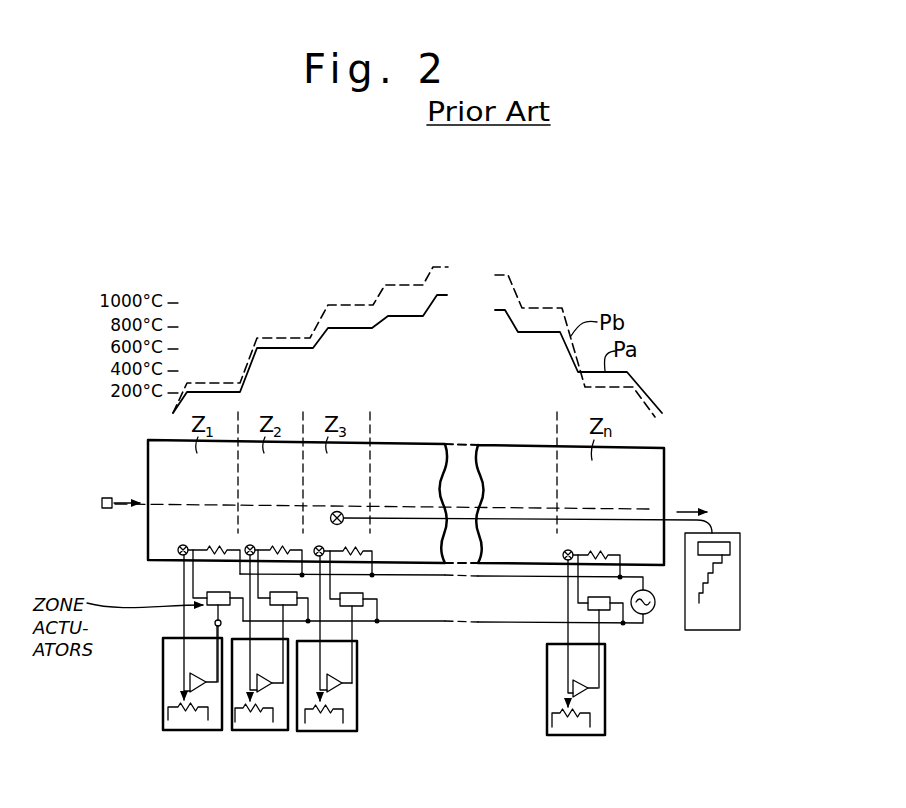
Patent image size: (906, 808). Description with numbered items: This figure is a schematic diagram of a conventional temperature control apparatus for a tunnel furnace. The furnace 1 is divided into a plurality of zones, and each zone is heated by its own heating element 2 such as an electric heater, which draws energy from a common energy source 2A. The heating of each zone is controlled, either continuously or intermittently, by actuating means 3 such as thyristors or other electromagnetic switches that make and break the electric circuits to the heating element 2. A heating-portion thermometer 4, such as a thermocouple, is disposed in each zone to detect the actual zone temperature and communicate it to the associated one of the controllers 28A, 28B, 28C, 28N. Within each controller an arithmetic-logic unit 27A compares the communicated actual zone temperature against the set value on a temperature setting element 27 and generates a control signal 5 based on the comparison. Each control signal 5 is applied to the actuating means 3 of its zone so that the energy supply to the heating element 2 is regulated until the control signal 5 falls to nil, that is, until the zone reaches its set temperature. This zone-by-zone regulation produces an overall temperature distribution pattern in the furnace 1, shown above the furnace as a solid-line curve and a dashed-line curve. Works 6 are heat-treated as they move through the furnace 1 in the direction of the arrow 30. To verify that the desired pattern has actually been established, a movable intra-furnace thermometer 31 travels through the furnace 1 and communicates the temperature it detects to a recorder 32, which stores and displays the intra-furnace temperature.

The furnace 1 is at (665, 458).
The heating element 2 is at (207, 548).
The energy source 2A is at (651, 614).
The actuating means 3 is at (215, 591).
The heating-portion thermometer 4 is at (178, 553).
The control signal 5 is at (215, 623).
The work 6 is at (102, 500).
The temperature setting element 27 is at (186, 710).
The arithmetic-logic unit 27A is at (204, 686).
The controller 28A is at (220, 723).
The controller 28B is at (280, 722).
The controller 28C is at (350, 723).
The controller 28N is at (597, 723).
The arrow 30 is at (125, 503).
The intra-furnace thermometer 31 is at (337, 511).
The recorder 32 is at (736, 630).